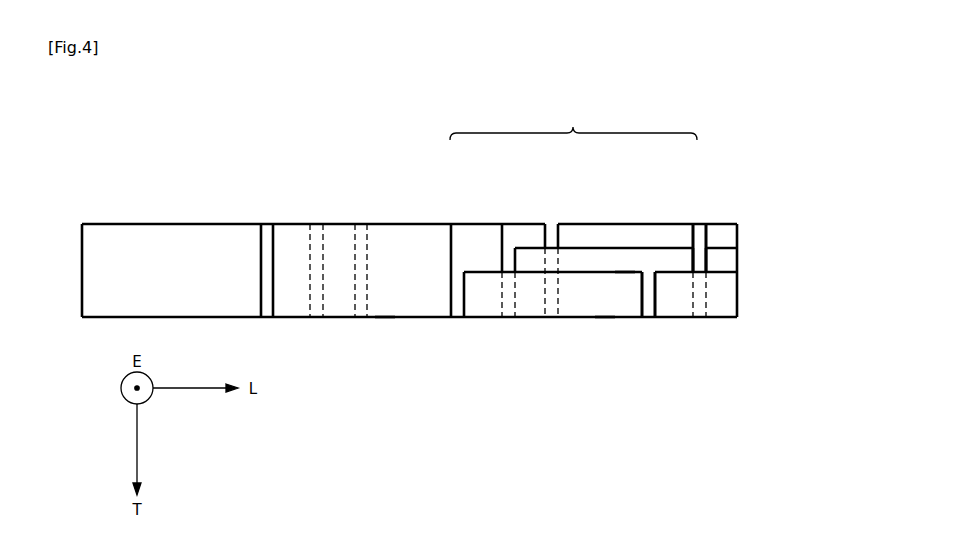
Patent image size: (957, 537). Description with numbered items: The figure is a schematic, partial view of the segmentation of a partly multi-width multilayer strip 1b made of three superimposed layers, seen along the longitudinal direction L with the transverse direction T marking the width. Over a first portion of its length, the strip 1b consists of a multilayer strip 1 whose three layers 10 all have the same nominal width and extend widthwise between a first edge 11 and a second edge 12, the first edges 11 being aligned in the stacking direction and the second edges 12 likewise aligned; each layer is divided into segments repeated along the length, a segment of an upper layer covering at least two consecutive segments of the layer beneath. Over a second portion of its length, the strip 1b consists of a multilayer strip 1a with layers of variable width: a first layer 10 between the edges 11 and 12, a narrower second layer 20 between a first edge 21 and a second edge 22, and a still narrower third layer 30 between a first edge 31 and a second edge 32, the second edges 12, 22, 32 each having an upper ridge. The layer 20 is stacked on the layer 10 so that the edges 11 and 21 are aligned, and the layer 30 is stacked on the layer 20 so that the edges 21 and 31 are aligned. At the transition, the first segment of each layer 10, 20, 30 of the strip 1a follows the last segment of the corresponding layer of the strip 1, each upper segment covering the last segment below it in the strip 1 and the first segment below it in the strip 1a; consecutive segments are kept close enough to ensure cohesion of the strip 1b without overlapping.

The multilayer strip 1 is at (405, 224).
The multilayer strip 1a is at (698, 224).
The multilayer strip 1b is at (573, 121).
The first layer 10 is at (268, 230).
The first edge 11 is at (382, 319).
The second edge 12 is at (337, 228).
The second layer 20 is at (590, 260).
The first edge 21 is at (647, 318).
The second edge 22 is at (671, 247).
The third layer 30 is at (487, 297).
The first edge 31 is at (604, 318).
The second edge 32 is at (625, 270).